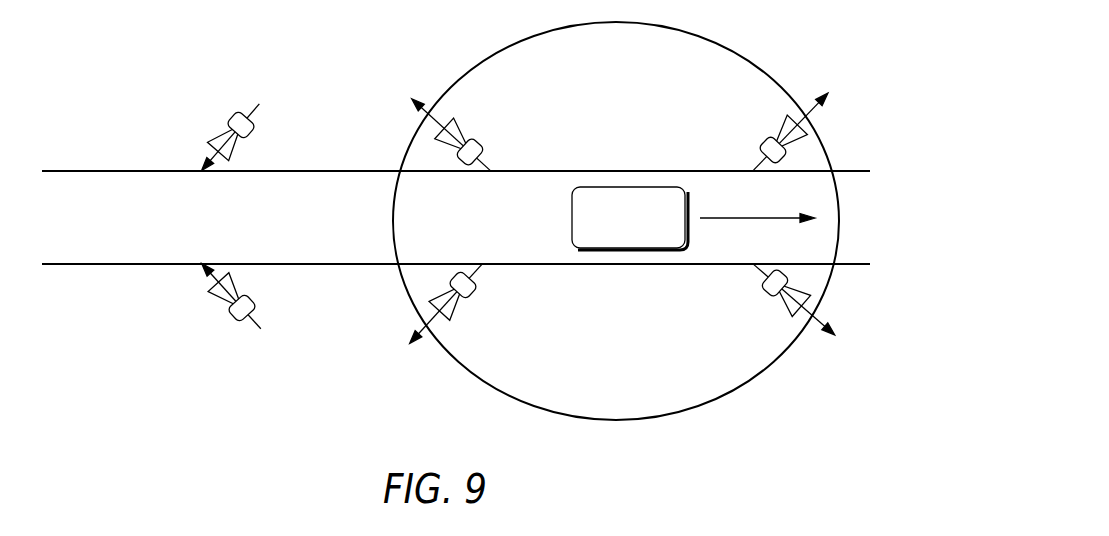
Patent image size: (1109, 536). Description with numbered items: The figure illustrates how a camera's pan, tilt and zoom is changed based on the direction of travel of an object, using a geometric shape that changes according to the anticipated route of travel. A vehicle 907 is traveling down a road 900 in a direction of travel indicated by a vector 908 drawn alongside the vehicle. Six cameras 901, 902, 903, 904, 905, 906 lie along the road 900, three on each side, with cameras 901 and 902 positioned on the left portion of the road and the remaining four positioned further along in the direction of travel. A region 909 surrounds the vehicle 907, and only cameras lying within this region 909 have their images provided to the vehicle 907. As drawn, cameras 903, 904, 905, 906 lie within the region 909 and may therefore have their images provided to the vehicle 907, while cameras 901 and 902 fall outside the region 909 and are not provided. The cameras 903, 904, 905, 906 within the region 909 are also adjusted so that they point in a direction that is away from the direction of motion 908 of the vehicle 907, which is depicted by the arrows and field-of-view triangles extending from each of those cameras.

The road 900 is at (131, 230).
The camera 901 is at (251, 119).
The camera 902 is at (231, 308).
The camera 903 is at (480, 141).
The camera 904 is at (483, 287).
The camera 905 is at (804, 124).
The camera 906 is at (766, 288).
The vehicle 907 is at (572, 212).
The vector 908 is at (746, 218).
The region 909 is at (738, 52).